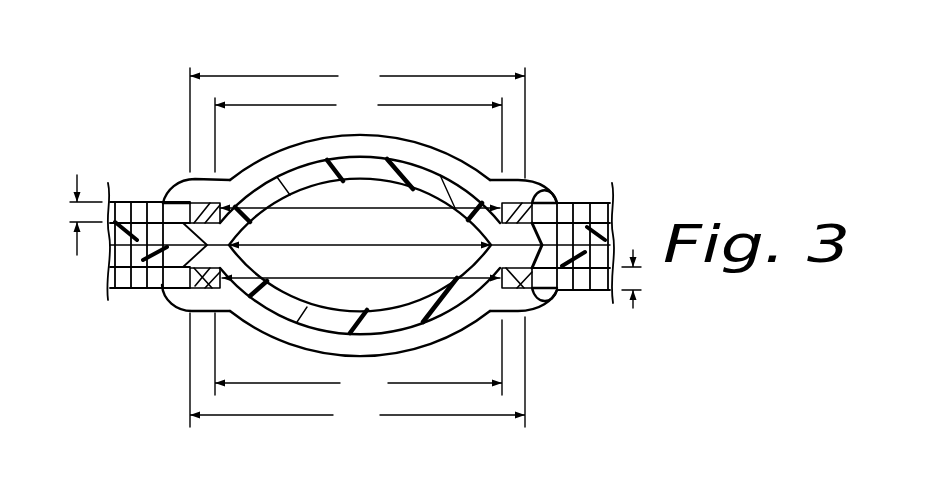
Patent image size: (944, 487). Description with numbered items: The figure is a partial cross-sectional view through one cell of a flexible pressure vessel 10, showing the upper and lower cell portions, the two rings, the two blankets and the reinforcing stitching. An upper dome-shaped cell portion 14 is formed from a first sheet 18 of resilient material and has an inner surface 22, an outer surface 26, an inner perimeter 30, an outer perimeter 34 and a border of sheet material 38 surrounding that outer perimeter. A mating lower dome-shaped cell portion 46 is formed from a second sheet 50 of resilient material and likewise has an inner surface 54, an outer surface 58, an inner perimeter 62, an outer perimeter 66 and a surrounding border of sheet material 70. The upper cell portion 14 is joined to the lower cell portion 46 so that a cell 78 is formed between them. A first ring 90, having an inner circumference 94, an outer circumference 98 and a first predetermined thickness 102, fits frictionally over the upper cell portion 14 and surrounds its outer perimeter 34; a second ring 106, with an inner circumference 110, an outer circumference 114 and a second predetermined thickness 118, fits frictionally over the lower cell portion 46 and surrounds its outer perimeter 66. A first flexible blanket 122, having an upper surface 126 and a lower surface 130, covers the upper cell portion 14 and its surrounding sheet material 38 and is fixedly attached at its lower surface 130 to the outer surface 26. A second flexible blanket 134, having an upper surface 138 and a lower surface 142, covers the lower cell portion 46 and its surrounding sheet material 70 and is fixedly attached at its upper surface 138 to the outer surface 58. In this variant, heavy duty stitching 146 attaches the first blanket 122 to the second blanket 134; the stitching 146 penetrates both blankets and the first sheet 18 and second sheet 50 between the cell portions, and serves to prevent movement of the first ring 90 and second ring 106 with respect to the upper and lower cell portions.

The flexible pressure vessel 10 is at (243, 167).
The upper dome-shaped cell portion 14 is at (437, 182).
The first sheet 18 is at (590, 200).
The inner surface 22 is at (460, 205).
The outer surface 26 is at (388, 157).
The inner perimeter 30 is at (360, 234).
The outer perimeter 34 is at (358, 132).
The border of sheet material 38 is at (181, 206).
The lower dome-shaped cell portion 46 is at (185, 295).
The second sheet 50 is at (577, 297).
The inner surface 54 is at (485, 318).
The outer surface 58 is at (480, 303).
The inner perimeter 62 is at (413, 239).
The outer perimeter 66 is at (358, 354).
The border of sheet material 70 is at (162, 283).
The cell 78 is at (316, 157).
The first ring 90 is at (520, 200).
The inner circumference 94 is at (387, 207).
The outer circumference 98 is at (357, 122).
The first predetermined thickness 102 is at (67, 213).
The second ring 106 is at (532, 305).
The inner circumference 110 is at (324, 281).
The outer circumference 114 is at (357, 372).
The second predetermined thickness 118 is at (637, 275).
The first flexible blanket 122 is at (170, 193).
The upper surface 126 is at (548, 198).
The lower surface 130 is at (573, 196).
The second flexible blanket 134 is at (552, 300).
The upper surface 138 is at (230, 308).
The lower surface 142 is at (290, 312).
The heavy duty stitching 146 is at (600, 197).